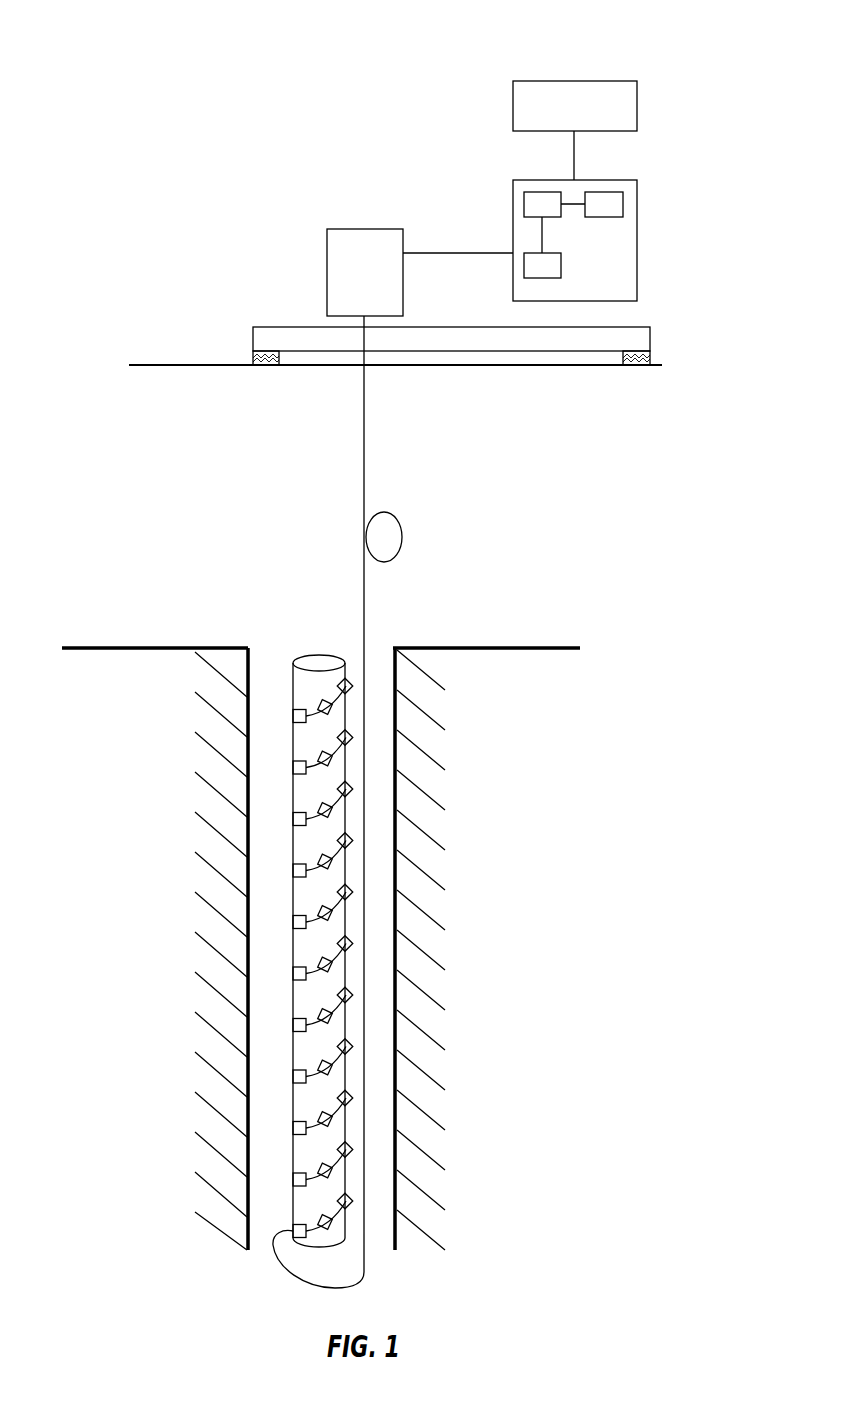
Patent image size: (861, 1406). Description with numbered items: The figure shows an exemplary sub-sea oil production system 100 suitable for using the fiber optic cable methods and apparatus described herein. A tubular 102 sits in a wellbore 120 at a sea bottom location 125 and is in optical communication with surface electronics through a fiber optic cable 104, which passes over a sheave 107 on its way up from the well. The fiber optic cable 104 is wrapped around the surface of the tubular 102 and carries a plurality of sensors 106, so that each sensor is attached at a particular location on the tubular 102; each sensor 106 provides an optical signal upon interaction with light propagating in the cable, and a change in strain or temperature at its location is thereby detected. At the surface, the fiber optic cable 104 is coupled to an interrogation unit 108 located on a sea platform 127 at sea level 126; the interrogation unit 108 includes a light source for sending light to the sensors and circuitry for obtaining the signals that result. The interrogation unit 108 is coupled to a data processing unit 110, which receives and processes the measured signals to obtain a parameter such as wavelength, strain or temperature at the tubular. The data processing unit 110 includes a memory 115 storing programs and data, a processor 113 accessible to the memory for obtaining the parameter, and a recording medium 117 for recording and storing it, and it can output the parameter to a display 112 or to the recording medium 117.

The oil production system 100 is at (130, 40).
The tubular 102 is at (237, 951).
The fiber optic cable 104 is at (362, 500).
The sensors 106 is at (293, 715).
The sheave / pulley 107 is at (403, 533).
The interrogation unit 108 is at (349, 229).
The data processing unit 110 is at (574, 216).
The display 112 is at (637, 106).
The processor 113 is at (523, 265).
The memory 115 is at (524, 204).
The recording medium 117 is at (623, 205).
The wellbore 120 is at (395, 1020).
The sea bottom location 125 is at (487, 648).
The sea level 126 is at (203, 364).
The sea platform 127 is at (288, 327).